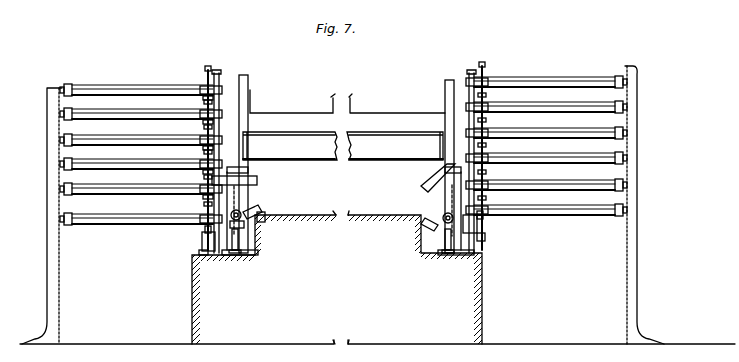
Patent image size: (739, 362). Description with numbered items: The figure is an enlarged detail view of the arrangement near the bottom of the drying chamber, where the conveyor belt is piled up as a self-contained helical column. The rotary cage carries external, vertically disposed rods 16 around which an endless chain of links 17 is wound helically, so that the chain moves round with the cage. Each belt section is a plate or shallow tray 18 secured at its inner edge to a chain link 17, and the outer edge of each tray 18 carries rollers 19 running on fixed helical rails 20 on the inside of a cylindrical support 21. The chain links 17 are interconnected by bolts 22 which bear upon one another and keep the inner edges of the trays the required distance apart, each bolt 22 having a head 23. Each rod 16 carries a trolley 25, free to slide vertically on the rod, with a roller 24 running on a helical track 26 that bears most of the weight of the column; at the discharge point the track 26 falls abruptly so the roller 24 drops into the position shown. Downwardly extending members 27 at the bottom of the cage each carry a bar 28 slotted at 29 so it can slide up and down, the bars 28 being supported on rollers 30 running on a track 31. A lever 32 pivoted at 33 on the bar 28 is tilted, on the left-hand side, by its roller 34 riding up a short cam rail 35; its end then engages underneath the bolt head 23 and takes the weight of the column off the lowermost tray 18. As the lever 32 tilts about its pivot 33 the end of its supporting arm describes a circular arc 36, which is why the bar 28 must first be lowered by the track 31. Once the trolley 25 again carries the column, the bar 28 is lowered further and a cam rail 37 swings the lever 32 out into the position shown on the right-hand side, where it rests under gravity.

The rod 16 is at (218, 105).
The chain link 17 is at (202, 92).
The tray 18 is at (155, 90).
The roller 19 is at (70, 100).
The rail 20 is at (66, 120).
The cylindrical support 21 is at (52, 220).
The bolt 22 is at (204, 157).
The bolt head 23 is at (208, 123).
The roller 24 is at (200, 246).
The trolley 25 is at (202, 233).
The helical track 26 is at (205, 257).
The downwardly extending member 27 is at (246, 160).
The bar 28 is at (250, 165).
The slot 29 is at (250, 186).
The roller 30 is at (258, 252).
The track 31 is at (240, 257).
The lever 32 is at (208, 198).
The pivot 33 is at (252, 227).
The roller 34 is at (246, 213).
The cam rail 35 is at (262, 213).
The circular arc 36 is at (248, 166).
The cam rail 37 is at (420, 226).